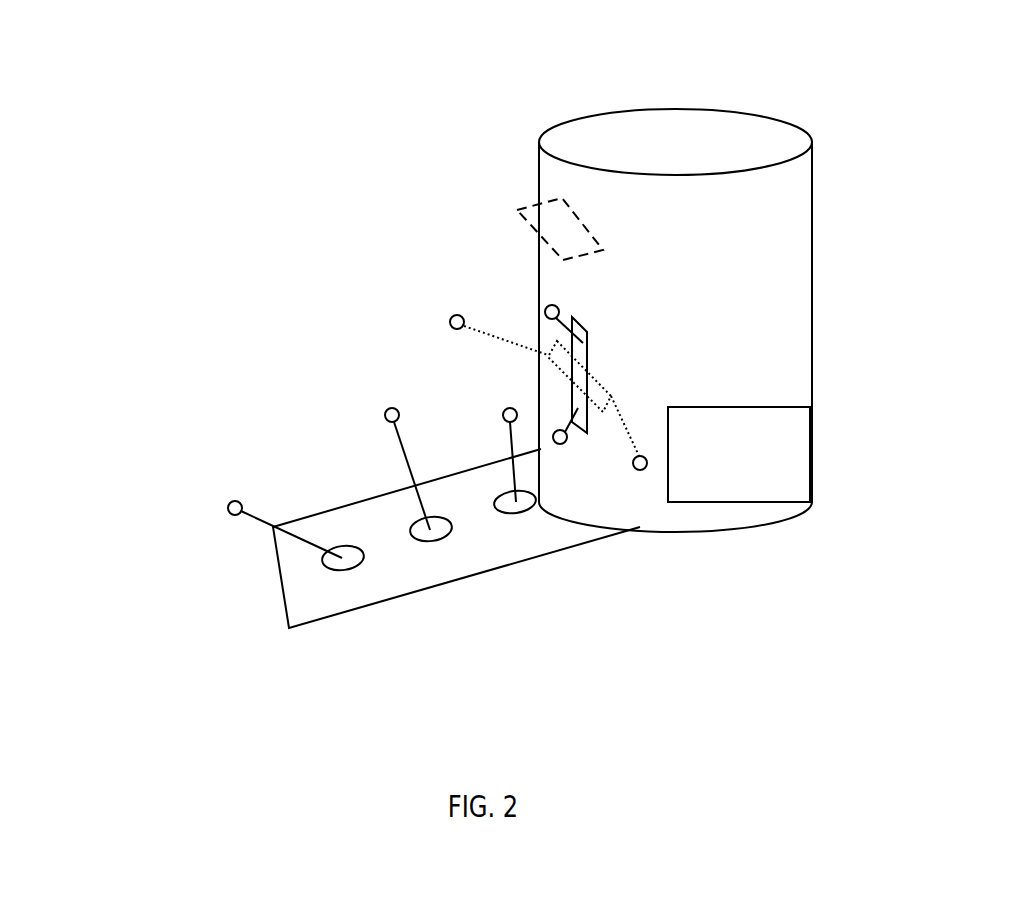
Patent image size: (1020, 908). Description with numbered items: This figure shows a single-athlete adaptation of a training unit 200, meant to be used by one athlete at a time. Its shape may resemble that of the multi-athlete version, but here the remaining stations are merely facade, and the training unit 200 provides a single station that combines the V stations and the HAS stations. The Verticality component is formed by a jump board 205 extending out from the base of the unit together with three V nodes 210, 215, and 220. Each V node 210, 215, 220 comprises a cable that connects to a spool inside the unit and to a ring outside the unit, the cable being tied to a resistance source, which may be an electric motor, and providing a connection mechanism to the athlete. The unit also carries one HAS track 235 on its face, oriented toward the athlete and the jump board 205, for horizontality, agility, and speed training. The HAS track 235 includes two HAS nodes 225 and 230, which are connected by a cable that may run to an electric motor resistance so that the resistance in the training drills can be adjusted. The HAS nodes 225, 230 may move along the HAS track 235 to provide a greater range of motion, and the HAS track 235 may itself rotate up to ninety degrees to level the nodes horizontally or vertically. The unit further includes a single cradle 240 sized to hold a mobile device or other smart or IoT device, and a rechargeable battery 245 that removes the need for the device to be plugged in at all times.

The training unit 200 is at (753, 117).
The jump board 205 is at (448, 600).
The V node 210 is at (503, 415).
The V node 215 is at (383, 415).
The V node 220 is at (226, 508).
The HAS node 225 is at (567, 455).
The HAS node 230 is at (538, 303).
The HAS track 235 is at (597, 347).
The cradle 240 is at (533, 203).
The rechargeable battery 245 is at (805, 462).